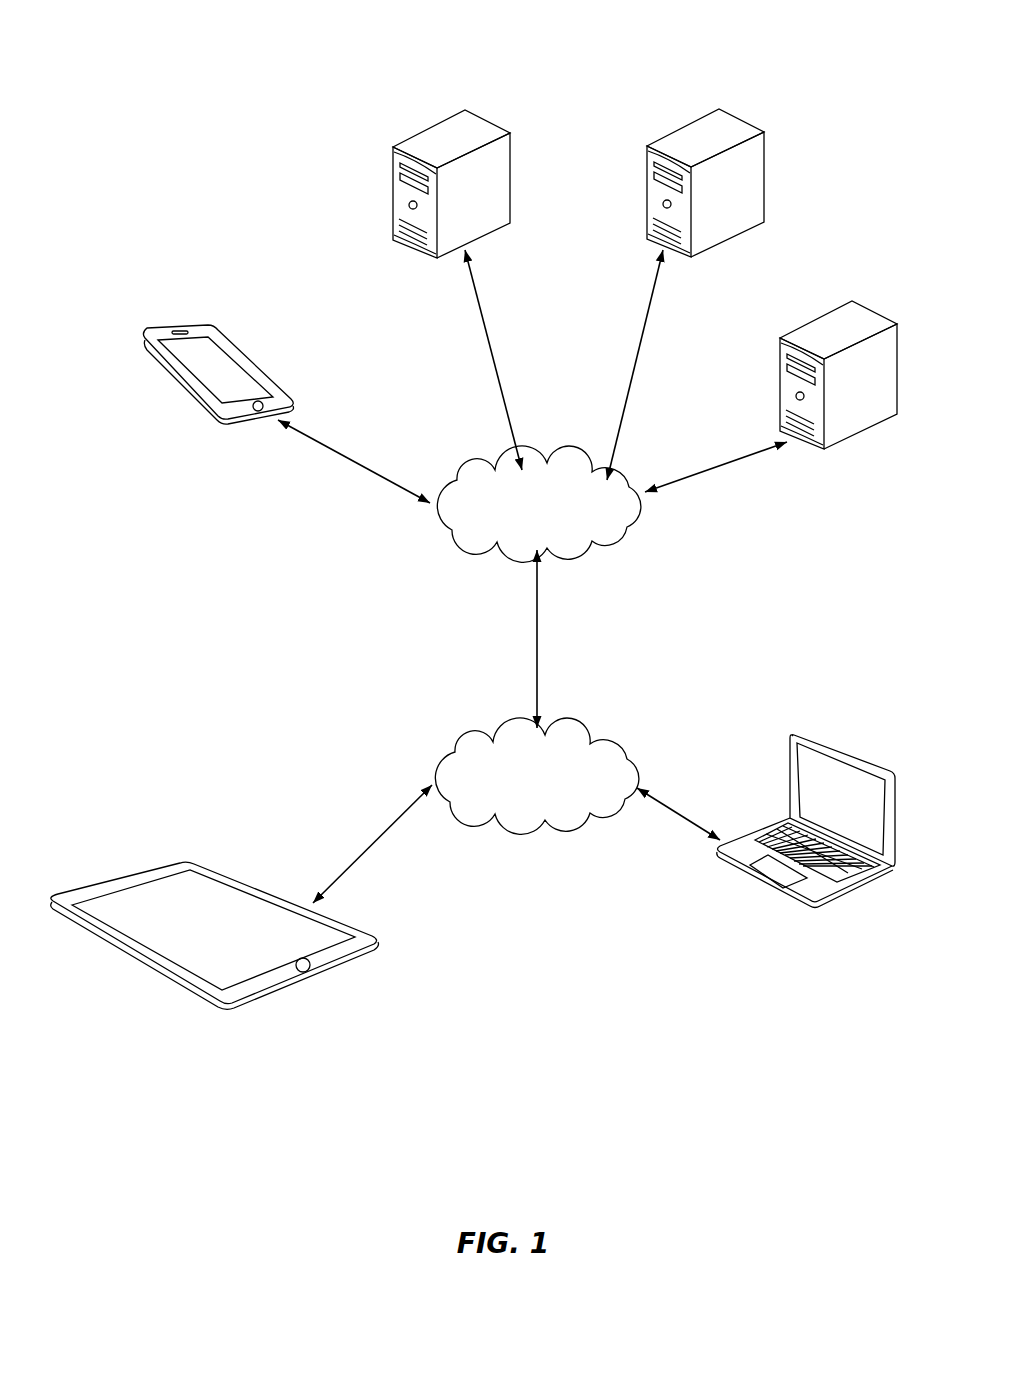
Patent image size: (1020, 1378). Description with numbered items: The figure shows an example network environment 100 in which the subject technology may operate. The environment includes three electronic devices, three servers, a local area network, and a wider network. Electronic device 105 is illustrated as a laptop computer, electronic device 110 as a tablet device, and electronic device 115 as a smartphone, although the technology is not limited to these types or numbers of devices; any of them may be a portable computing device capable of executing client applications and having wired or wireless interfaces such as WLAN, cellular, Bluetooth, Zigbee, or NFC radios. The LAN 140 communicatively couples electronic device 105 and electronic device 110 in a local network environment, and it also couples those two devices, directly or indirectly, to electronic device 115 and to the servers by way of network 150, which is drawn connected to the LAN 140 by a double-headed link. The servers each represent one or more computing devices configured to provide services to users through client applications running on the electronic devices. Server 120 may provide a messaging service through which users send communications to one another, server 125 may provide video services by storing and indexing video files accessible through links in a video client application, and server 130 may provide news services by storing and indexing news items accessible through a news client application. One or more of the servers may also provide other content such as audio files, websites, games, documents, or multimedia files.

The network environment 100 is at (100, 80).
The electronic device 105 is at (783, 888).
The electronic device 110 is at (250, 887).
The electronic device 115 is at (247, 360).
The server 120 is at (450, 114).
The server 125 is at (697, 113).
The server 130 is at (832, 312).
The local area network (LAN) 140 is at (452, 752).
The network 150 is at (455, 480).